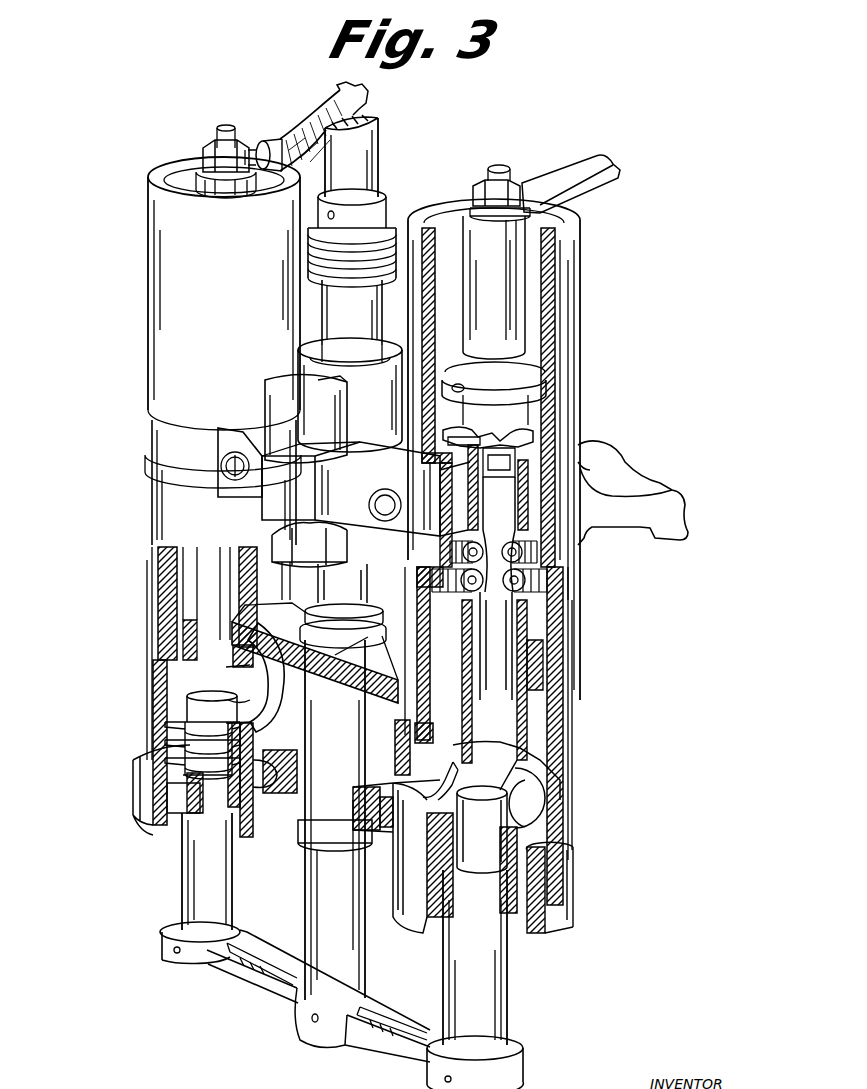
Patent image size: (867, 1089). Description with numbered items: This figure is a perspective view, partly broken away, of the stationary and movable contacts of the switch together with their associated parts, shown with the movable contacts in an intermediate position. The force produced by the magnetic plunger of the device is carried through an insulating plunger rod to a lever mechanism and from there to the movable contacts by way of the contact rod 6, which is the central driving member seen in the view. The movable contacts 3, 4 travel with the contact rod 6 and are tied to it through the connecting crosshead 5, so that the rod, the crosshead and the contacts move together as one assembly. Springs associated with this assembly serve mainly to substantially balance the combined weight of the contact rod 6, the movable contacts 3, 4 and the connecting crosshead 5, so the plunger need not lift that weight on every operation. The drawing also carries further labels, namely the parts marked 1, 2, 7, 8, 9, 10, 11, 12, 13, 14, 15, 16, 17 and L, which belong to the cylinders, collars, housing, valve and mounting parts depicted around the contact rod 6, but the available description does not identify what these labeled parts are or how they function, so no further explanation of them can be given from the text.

The valve stem 1 is at (506, 669).
The lubricant cylinder 2 is at (204, 590).
The movable contact 3 is at (490, 995).
The movable contact 4 is at (200, 876).
The connecting crosshead 5 is at (262, 984).
The contact rod 6 is at (357, 159).
The collar 7 is at (388, 236).
The cup 8 is at (318, 336).
The nut 9 is at (218, 188).
The springs 10 is at (510, 600).
The outer cylinder 11 is at (568, 356).
The reservoir cylinder 12 is at (178, 322).
The valve plug 13 is at (265, 690).
The rod 14 is at (388, 648).
The piston 15 is at (455, 775).
The valve body 16 is at (532, 810).
The grooved plug 17 is at (210, 763).
The lubricant line L is at (99, 589).